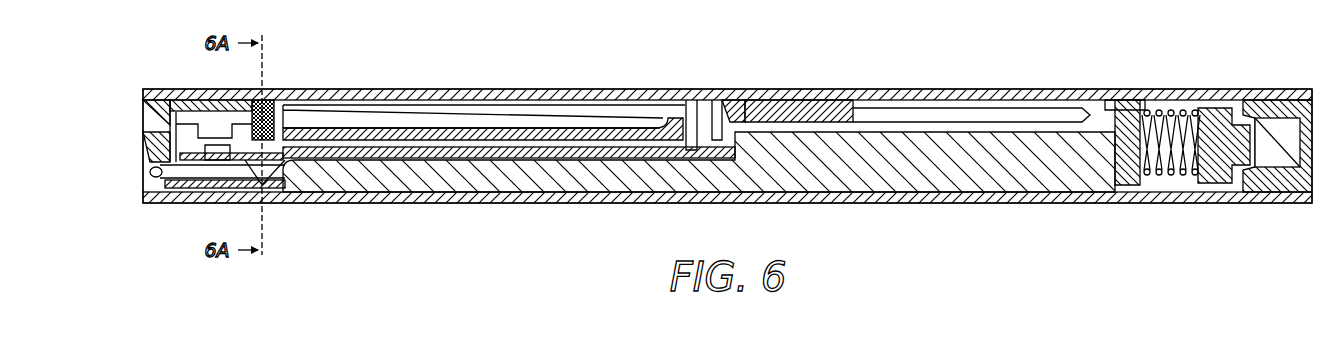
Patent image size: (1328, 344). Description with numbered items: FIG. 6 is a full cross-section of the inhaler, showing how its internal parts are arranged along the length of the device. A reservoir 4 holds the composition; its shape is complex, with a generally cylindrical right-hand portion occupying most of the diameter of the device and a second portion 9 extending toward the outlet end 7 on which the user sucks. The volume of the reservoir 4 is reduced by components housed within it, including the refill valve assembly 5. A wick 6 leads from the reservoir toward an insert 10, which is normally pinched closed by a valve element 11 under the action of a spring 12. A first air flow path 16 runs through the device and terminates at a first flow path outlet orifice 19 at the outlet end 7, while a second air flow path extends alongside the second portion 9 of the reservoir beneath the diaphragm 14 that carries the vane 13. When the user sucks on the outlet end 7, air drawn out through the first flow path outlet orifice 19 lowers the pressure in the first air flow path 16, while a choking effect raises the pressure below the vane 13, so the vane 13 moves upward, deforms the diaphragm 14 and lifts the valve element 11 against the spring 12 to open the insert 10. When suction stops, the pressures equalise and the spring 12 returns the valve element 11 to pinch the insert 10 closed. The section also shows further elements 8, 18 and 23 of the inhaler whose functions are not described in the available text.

The reservoir 4 is at (1258, 75).
The refill valve assembly 5 is at (1215, 188).
The wick 6 is at (852, 190).
The outlet end 7 is at (160, 205).
The housing 8 is at (982, 190).
The second portion of the reservoir 9 is at (430, 178).
The insert 10 is at (205, 190).
The valve element 11 is at (277, 190).
The spring 12 is at (265, 100).
The vane 13 is at (355, 112).
The diaphragm 14 is at (690, 98).
The first air flow path 16 is at (590, 108).
The outer housing 18 is at (432, 92).
The first flow path outlet orifice 19 is at (148, 112).
The needle tip 23 is at (150, 183).